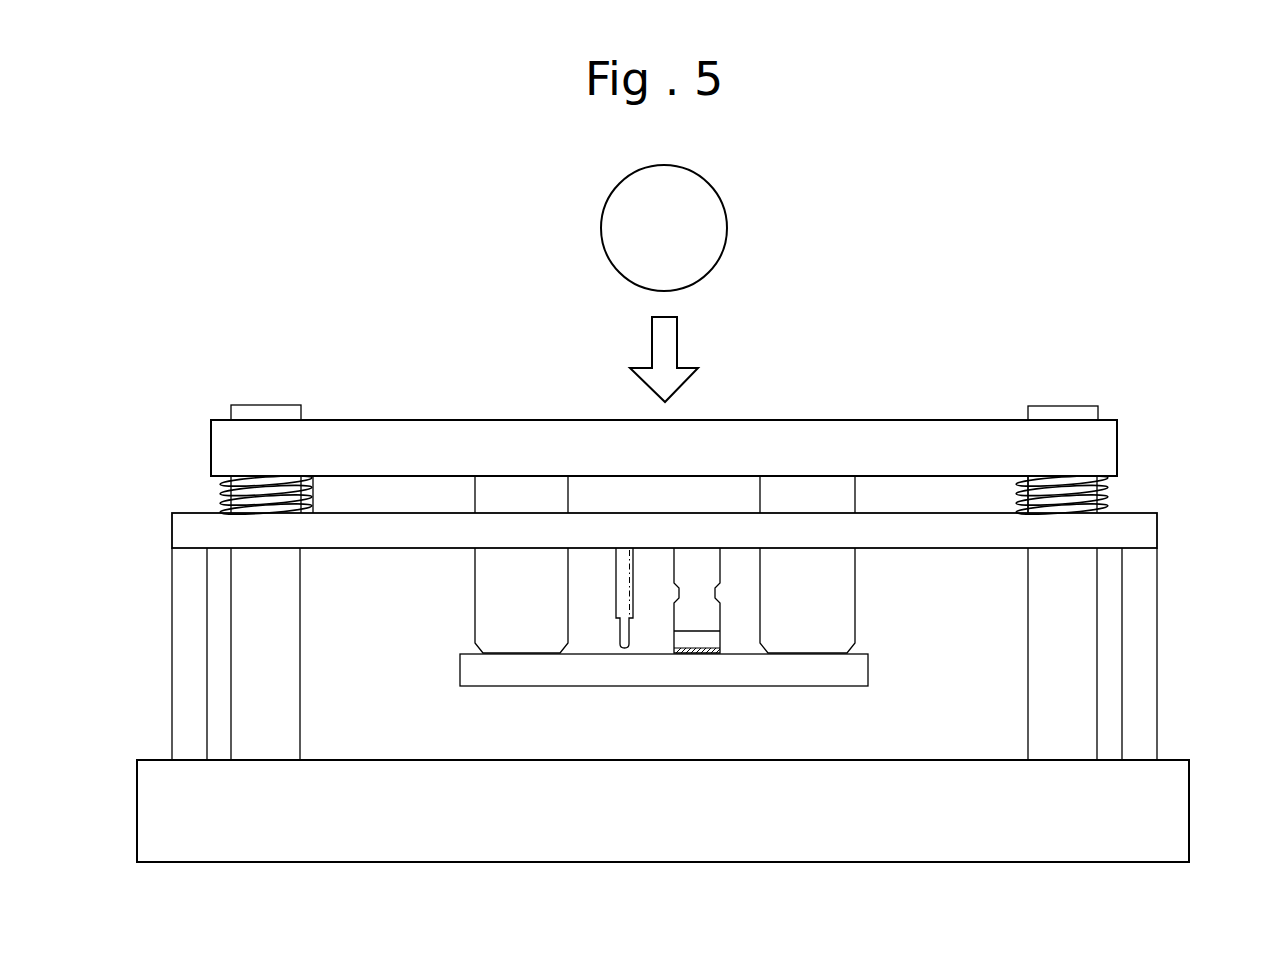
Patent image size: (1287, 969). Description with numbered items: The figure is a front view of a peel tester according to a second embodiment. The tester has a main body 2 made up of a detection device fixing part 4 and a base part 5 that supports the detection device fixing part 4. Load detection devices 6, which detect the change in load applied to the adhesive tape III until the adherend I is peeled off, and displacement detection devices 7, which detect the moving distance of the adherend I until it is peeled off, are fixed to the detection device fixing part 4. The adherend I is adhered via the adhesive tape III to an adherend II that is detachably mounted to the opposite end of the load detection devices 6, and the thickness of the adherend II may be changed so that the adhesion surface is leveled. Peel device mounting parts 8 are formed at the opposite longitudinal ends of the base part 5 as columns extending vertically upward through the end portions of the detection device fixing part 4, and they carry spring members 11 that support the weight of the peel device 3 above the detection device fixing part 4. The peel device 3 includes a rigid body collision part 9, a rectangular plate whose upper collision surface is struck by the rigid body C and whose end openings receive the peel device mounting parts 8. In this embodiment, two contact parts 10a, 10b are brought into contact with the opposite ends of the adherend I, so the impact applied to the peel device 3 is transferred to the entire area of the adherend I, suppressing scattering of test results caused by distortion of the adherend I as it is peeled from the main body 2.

The rigid body C is at (702, 227).
The peel device 3 is at (441, 375).
The rigid body collision part 9 is at (589, 435).
The peel device mounting part 8 is at (1062, 413).
The spring member 11 is at (218, 493).
The contact part 10a is at (828, 610).
The contact part 10b is at (493, 594).
The load detection device 6 is at (622, 587).
The displacement detection device 7 is at (682, 612).
The adherend II is at (680, 642).
The adhesive tape III is at (700, 657).
The adherend I is at (477, 671).
The main body 2 is at (1260, 545).
The detection device fixing part 4 is at (1143, 533).
The base part 5 is at (1178, 681).